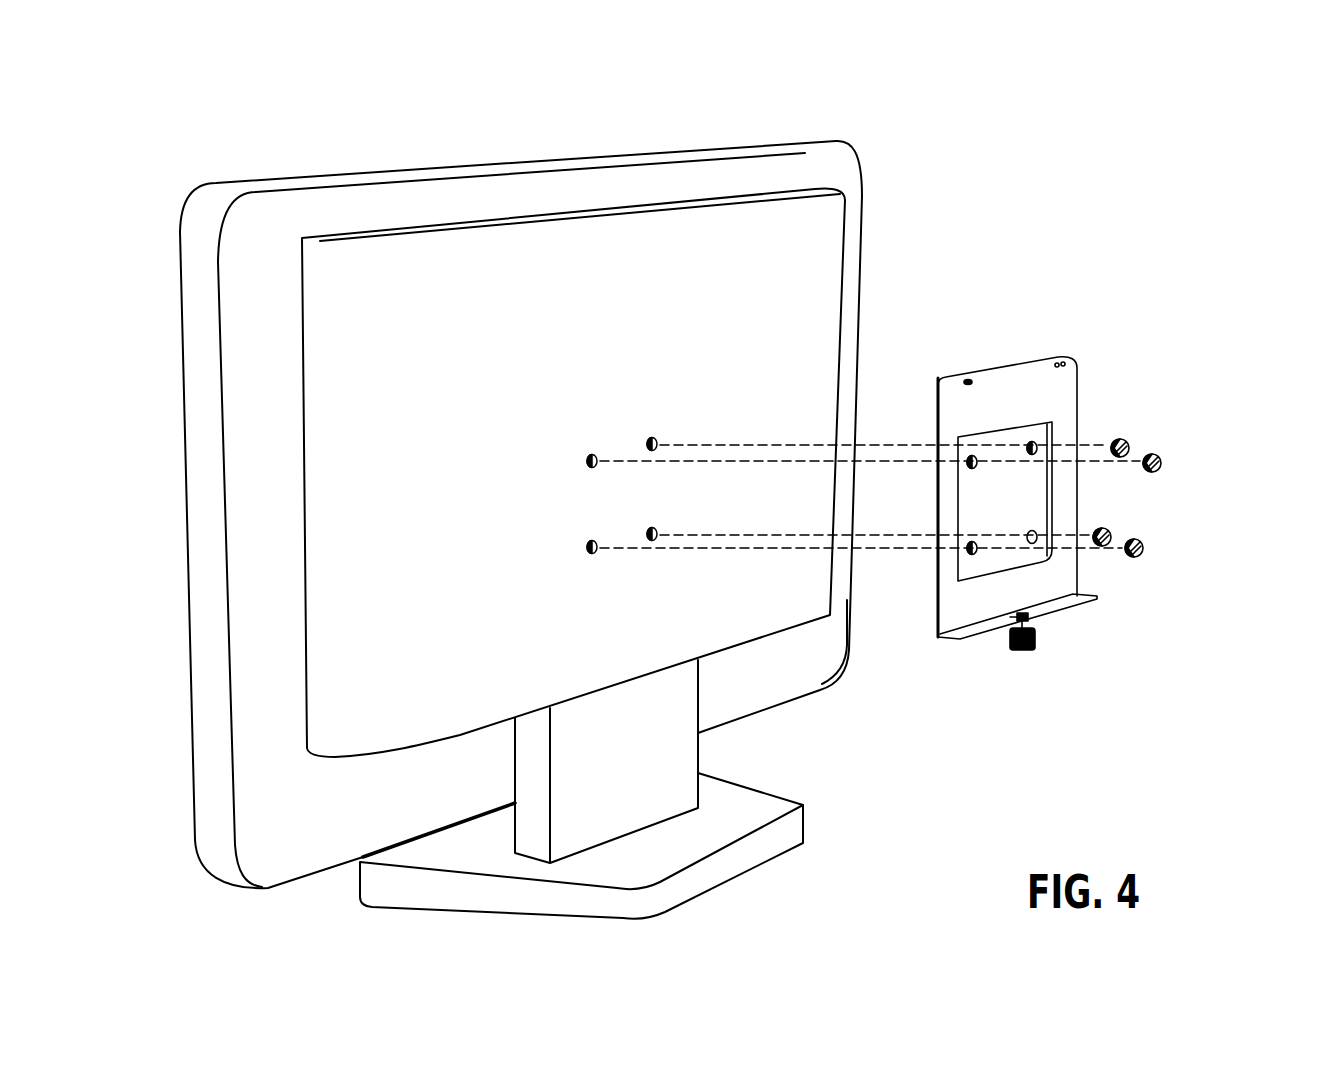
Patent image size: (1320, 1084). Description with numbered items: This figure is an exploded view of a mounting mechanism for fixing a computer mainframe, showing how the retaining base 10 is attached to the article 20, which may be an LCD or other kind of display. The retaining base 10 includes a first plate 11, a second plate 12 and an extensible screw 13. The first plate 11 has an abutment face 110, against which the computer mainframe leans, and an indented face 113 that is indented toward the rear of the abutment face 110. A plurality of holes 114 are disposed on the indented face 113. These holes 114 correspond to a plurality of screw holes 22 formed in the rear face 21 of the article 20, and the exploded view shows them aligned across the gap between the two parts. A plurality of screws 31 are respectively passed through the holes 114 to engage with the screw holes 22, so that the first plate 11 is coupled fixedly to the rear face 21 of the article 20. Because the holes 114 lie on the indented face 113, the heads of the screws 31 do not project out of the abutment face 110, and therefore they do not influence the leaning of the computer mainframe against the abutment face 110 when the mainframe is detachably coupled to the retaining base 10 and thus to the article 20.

The retaining base 10 is at (1011, 487).
The first plate 11 is at (992, 367).
The abutment face 110 is at (1037, 378).
The indented face 113 is at (962, 522).
The holes 114 is at (970, 457).
The second plate 12 is at (960, 638).
The extensible screw 13 is at (1017, 652).
The article 20 is at (617, 156).
The rear face 21 is at (810, 242).
The screw holes 22 is at (592, 455).
The screws 31 is at (1121, 446).